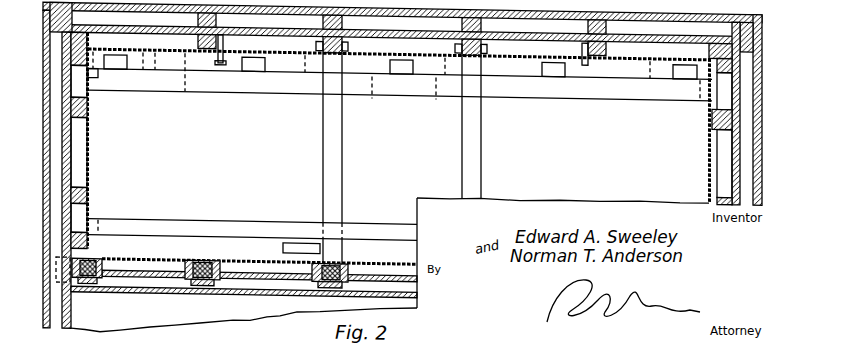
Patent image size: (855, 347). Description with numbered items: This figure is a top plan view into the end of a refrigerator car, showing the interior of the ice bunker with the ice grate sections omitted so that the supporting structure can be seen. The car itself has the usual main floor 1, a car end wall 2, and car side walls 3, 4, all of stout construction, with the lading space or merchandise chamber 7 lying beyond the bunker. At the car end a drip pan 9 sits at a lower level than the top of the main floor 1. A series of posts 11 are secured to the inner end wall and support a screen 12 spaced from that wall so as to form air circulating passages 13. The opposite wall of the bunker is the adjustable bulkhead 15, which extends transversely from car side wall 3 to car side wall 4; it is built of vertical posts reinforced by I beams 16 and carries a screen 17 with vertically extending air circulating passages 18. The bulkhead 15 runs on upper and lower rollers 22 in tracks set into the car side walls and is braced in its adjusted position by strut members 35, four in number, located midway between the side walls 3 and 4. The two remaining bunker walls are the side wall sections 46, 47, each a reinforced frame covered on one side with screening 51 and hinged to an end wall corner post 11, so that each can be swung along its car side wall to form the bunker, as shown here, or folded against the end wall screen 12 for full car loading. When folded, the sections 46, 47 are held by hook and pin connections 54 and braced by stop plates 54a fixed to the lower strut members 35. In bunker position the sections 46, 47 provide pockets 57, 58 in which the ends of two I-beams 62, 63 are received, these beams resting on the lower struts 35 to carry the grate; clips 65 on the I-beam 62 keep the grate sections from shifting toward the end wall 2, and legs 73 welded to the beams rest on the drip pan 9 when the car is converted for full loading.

The main floor 1 is at (78, 312).
The car end wall 2 is at (82, 12).
The car side wall 3 is at (57, 142).
The car side wall 4 is at (747, 127).
The lading space or merchandise chamber 7 is at (235, 306).
The drip pan 9 is at (540, 140).
The posts 11 is at (72, 41).
The screen 12 is at (528, 51).
The air circulating passages 13 is at (167, 37).
The adjustable bulkhead 15 is at (160, 292).
The I beam 16 is at (225, 259).
The screen 17 is at (163, 252).
The air circulating passages 18 is at (280, 265).
The rollers 22 is at (60, 269).
The strut members 35 is at (325, 150).
The bunker side wall section 46 is at (78, 142).
The bunker side wall section 47 is at (725, 145).
The screening 51 is at (88, 172).
The hook and pin connection 54 is at (220, 68).
The stop plates 54a is at (305, 245).
The seat or pocket 57 is at (95, 88).
The seat or pocket 58 is at (95, 218).
The I-beam 62 is at (612, 81).
The I-beam 63 is at (248, 223).
The clips 65 is at (127, 58).
The legs 73 is at (372, 74).